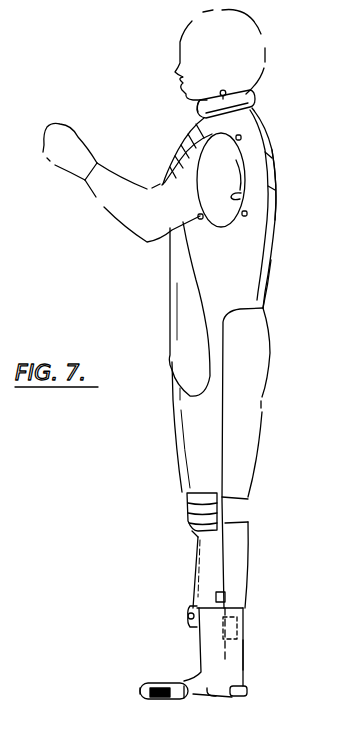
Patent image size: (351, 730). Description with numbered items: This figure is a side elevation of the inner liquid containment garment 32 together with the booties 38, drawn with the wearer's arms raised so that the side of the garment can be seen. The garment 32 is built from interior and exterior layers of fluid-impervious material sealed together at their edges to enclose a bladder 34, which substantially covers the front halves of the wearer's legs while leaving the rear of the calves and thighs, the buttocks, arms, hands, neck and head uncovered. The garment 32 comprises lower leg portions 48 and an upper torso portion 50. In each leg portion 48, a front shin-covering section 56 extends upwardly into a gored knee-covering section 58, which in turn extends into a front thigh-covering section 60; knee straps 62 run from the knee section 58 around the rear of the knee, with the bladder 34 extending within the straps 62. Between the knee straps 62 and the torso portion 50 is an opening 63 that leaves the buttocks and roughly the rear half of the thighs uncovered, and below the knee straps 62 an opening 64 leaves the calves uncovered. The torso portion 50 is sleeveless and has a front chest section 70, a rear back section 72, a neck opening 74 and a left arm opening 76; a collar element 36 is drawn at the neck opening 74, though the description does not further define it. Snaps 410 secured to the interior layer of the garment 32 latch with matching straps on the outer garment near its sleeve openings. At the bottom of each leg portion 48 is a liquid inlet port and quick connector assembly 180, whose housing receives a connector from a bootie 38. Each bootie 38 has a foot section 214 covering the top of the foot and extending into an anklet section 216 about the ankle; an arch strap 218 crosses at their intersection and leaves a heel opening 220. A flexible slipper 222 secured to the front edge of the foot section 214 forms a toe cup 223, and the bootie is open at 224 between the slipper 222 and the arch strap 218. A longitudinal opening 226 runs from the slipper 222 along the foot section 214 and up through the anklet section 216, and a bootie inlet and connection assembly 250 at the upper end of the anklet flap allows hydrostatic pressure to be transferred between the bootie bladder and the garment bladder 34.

The inner liquid containment garment 32 is at (268, 289).
The bladder 34 is at (277, 160).
The collar 36 is at (257, 97).
The booty 38 is at (247, 643).
The leg portion 48 is at (195, 468).
The torso portion 50 is at (177, 271).
The front shin-covering section 56 is at (197, 552).
The gored knee-covering section 58 is at (187, 512).
The front thigh-covering section 60 is at (176, 417).
The knee strap 62 is at (240, 513).
The opening 63 is at (256, 416).
The opening 64 is at (247, 555).
The front chest section 70 is at (172, 155).
The rear back section 72 is at (277, 177).
The neck opening 74 is at (196, 99).
The left arm opening 76 is at (241, 196).
The liquid inlet port and quick connector assembly 180 is at (190, 601).
The foot section 214 is at (167, 680).
The anklet section 216 is at (237, 657).
The arch strap 218 is at (217, 692).
The heel opening 220 is at (247, 690).
The flexible slipper 222 is at (140, 690).
The toe cup 223 is at (140, 698).
The opening 224 is at (188, 696).
The opening 226 is at (256, 608).
The bootie inlet and connection assembly 250 is at (193, 622).
The snaps 410 is at (241, 138).